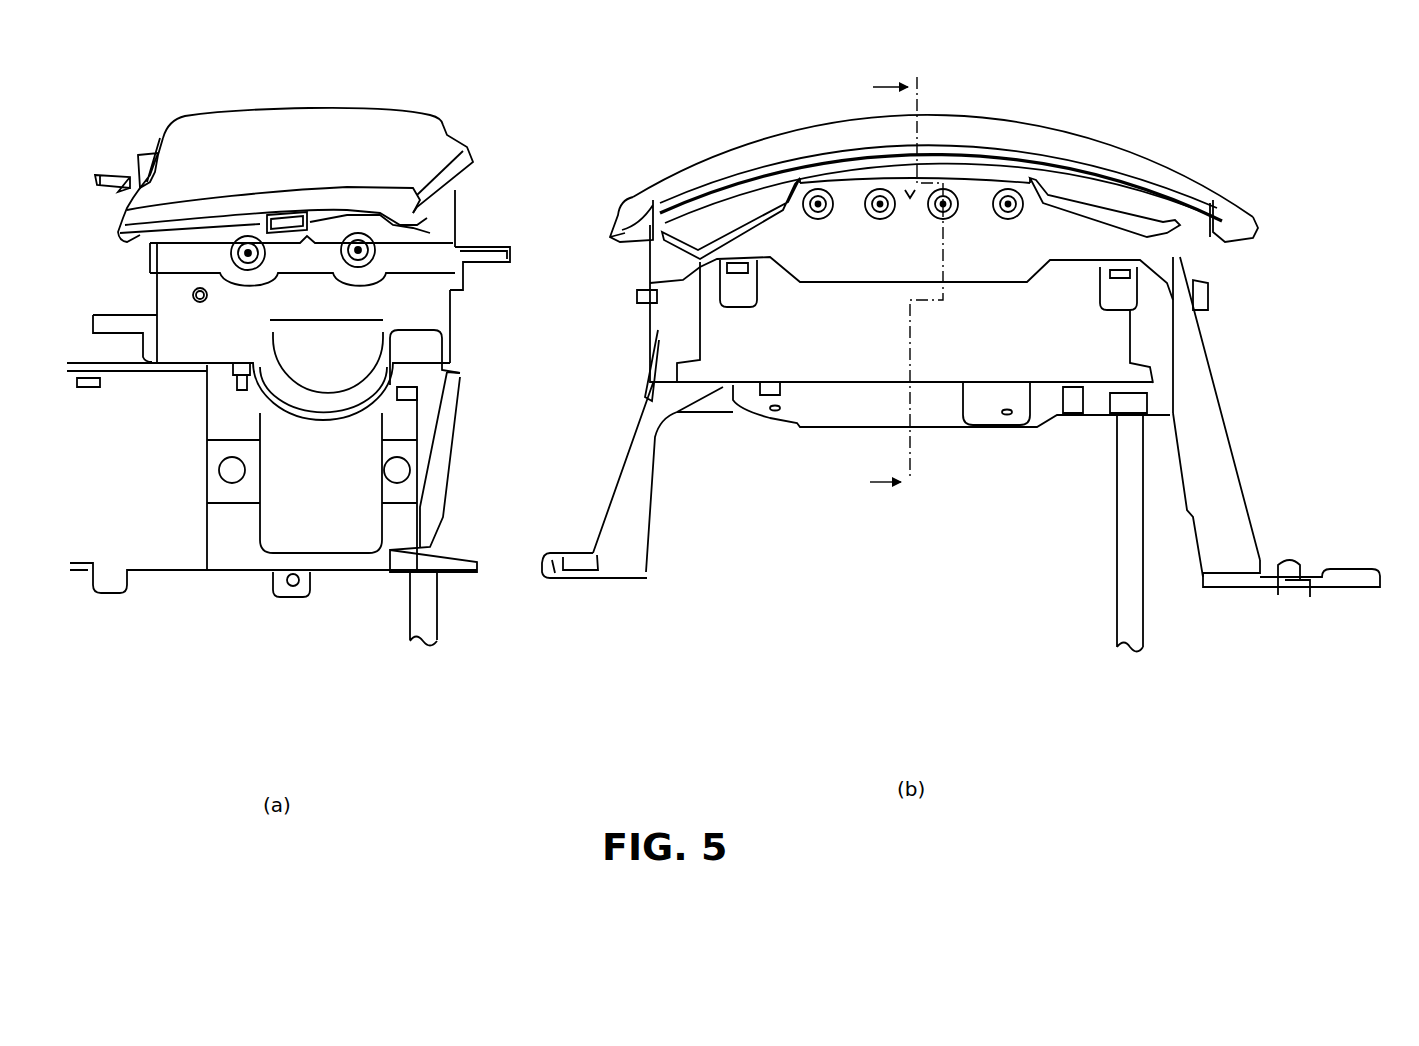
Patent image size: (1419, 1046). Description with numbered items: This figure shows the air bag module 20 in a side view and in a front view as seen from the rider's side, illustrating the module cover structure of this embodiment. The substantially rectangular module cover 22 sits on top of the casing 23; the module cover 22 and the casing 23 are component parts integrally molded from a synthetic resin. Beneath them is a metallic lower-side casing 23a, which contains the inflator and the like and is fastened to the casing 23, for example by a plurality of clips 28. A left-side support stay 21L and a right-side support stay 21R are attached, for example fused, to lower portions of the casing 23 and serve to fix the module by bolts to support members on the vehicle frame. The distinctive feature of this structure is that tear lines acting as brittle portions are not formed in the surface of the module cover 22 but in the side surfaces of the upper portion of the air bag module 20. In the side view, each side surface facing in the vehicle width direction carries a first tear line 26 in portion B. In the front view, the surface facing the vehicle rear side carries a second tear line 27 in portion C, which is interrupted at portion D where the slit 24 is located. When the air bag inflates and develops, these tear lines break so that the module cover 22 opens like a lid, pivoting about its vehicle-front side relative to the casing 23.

The air bag module 20 is at (176, 107).
The left-side support stay 21L is at (437, 410).
The right-side support stay 21R is at (227, 530).
The module cover 22 is at (278, 148).
The casing 23 is at (437, 240).
The lower-side casing 23a is at (430, 313).
The slit 24 is at (722, 210).
The first tear line 26 is at (347, 210).
The second tear line 27 is at (837, 183).
The clips 28 is at (957, 212).